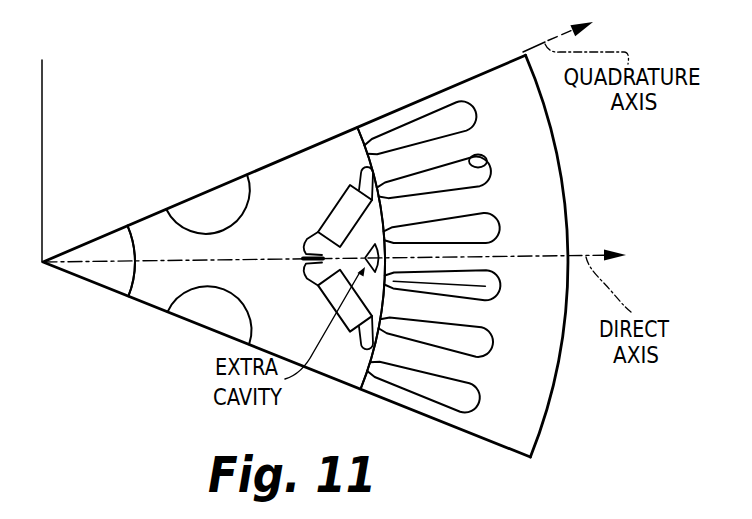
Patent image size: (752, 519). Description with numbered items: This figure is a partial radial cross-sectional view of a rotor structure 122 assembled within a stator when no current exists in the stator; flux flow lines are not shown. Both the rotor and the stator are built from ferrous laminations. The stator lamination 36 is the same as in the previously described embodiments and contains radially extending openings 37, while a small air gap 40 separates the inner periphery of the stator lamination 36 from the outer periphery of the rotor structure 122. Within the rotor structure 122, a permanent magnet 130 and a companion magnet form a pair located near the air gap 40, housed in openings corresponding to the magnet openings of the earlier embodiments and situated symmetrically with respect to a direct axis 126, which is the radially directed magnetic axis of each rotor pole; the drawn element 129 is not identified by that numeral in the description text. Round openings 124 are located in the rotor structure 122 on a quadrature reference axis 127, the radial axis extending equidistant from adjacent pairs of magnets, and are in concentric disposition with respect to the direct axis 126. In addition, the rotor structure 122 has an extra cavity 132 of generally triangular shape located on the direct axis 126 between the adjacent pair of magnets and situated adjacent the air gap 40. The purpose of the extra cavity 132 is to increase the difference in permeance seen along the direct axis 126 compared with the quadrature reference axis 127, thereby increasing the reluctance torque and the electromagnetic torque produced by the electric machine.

The stator lamination 36 is at (568, 200).
The radially extending opening 37 is at (492, 166).
The air gap 40 is at (354, 133).
The rotor structure 122 is at (277, 173).
The round opening 124 is at (240, 214).
The direct axis 126 is at (133, 292).
The quadrature reference axis 127 is at (443, 82).
The permanent magnet 129 is at (340, 217).
The permanent magnet 130 is at (328, 283).
The extra cavity 132 is at (493, 282).